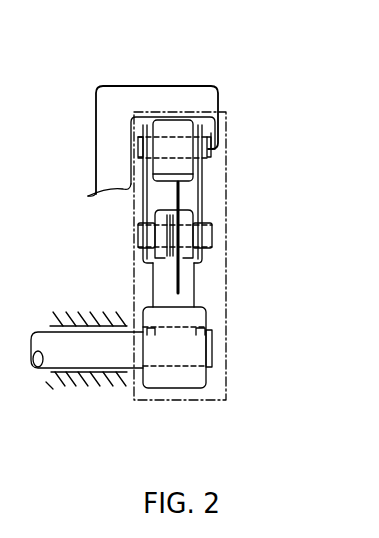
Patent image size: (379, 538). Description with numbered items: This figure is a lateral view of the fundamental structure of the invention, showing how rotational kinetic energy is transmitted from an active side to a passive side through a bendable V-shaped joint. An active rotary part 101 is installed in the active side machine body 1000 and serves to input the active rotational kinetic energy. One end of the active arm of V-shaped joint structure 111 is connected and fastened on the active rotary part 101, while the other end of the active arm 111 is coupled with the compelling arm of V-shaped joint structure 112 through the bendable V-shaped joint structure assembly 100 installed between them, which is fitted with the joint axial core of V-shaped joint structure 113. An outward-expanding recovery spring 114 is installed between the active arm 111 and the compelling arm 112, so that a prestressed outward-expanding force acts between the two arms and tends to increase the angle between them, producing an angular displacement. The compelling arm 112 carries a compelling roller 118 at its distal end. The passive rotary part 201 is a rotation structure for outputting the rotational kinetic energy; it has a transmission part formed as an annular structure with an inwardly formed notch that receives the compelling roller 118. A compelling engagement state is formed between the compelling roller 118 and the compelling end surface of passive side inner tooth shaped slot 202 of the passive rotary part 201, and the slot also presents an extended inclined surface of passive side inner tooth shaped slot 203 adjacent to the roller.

The V-shaped joint structure assembly 100 is at (228, 337).
The active rotary part 101 is at (117, 353).
The active arm of V-shaped joint structure 111 is at (163, 297).
The compelling arm of V-shaped joint structure 112 is at (198, 202).
The joint axial core of V-shaped joint structure 113 is at (212, 235).
The outward-expanding recovery spring 114 is at (134, 200).
The compelling roller 118 is at (177, 128).
The passive rotary part 201 is at (108, 139).
The compelling end surface of passive side inner tooth shaped slot 202 is at (212, 123).
The extended inclined surface of passive side inner tooth shaped slot 203 is at (220, 145).
The active side machine body 1000 is at (84, 376).